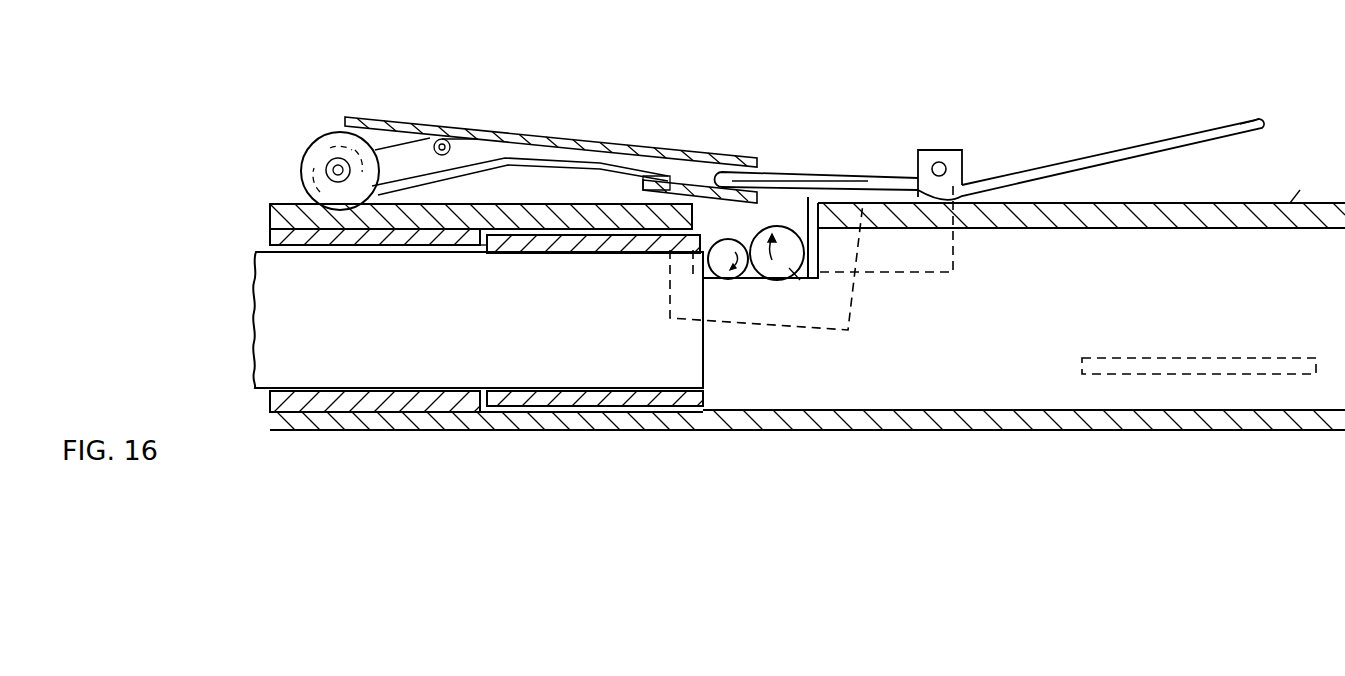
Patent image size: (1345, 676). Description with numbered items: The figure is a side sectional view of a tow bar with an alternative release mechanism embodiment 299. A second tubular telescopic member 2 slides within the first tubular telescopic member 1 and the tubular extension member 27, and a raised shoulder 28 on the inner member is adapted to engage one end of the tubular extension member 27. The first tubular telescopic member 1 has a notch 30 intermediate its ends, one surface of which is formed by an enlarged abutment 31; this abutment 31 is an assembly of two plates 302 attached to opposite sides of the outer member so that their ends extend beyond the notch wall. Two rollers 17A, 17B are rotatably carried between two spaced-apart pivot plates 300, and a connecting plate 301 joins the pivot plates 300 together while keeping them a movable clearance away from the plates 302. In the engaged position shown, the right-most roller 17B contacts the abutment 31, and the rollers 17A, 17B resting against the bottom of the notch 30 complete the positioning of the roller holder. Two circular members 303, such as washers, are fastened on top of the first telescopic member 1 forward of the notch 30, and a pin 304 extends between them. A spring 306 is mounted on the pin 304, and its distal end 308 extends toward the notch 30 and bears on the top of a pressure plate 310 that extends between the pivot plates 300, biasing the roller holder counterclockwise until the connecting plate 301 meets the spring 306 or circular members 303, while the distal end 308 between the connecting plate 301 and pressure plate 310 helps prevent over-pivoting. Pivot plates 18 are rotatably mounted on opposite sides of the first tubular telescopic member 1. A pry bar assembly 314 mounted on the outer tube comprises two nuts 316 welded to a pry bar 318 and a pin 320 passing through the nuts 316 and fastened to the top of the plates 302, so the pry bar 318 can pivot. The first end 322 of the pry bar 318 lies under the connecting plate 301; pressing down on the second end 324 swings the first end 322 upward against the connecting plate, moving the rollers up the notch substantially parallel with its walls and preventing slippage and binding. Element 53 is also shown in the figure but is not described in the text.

The first tubular telescopic member 1 is at (1295, 200).
The second tubular telescopic member 2 is at (403, 388).
The pivot plates 18 is at (808, 175).
The tubular extension member 27 is at (338, 420).
The raised shoulder 28 is at (513, 396).
The notch 30 is at (763, 278).
The abutment 31 is at (893, 172).
The sensor 53 is at (1195, 358).
The roller 17A is at (738, 279).
The roller 17B is at (800, 270).
The alternative release mechanism embodiment 299 is at (653, 100).
The pivot plates 300 is at (846, 322).
The connecting plate 301 is at (682, 203).
The plates 302 is at (953, 272).
The circular members 303 is at (345, 132).
The pin 304 is at (318, 182).
The spring 306 is at (326, 162).
The distal end of the spring 308 is at (633, 172).
The pressure plate 310 is at (712, 184).
The pry bar assembly 314 is at (1125, 125).
The nuts 316 is at (947, 170).
The pry bar 318 is at (1058, 162).
The pin 320 is at (940, 160).
The first end of the pry bar 322 is at (768, 176).
The second end of the pry bar 324 is at (1254, 122).